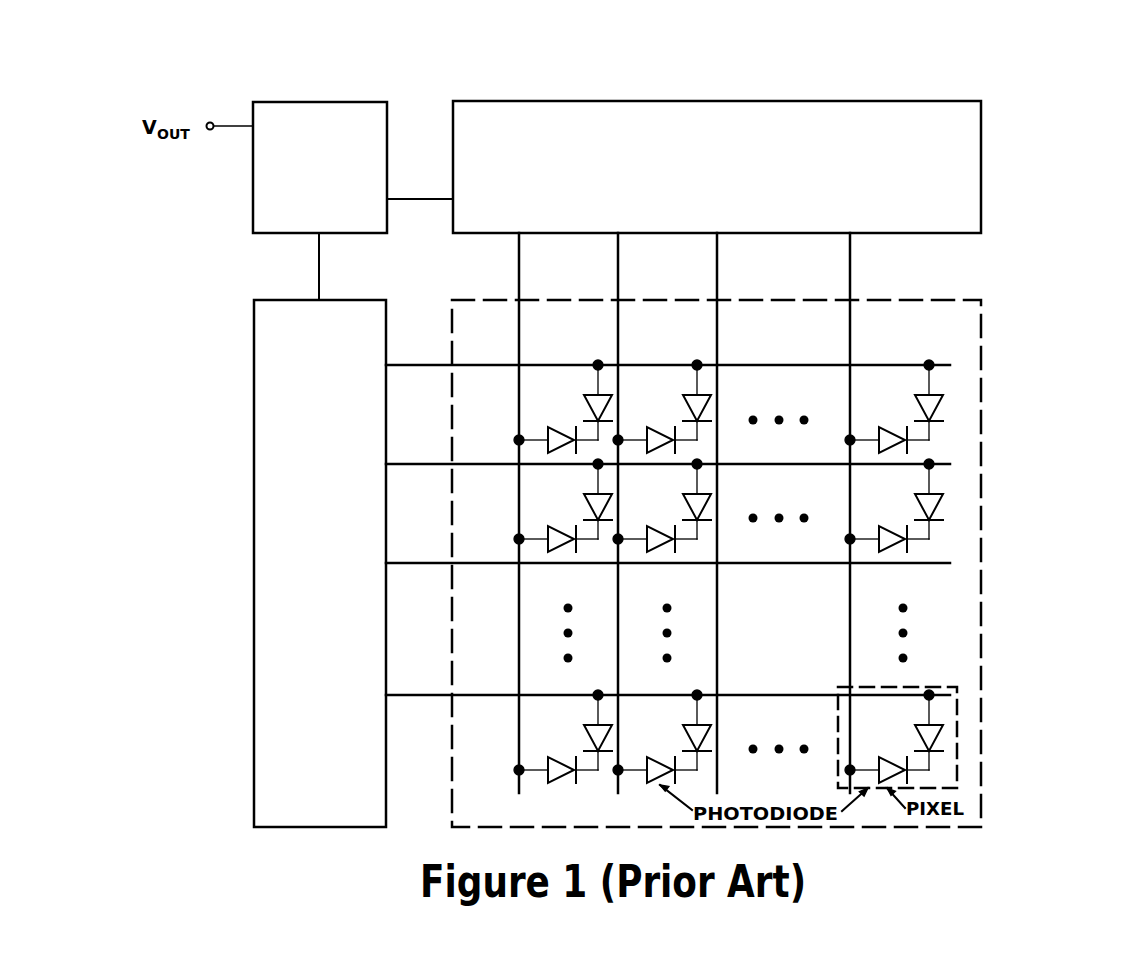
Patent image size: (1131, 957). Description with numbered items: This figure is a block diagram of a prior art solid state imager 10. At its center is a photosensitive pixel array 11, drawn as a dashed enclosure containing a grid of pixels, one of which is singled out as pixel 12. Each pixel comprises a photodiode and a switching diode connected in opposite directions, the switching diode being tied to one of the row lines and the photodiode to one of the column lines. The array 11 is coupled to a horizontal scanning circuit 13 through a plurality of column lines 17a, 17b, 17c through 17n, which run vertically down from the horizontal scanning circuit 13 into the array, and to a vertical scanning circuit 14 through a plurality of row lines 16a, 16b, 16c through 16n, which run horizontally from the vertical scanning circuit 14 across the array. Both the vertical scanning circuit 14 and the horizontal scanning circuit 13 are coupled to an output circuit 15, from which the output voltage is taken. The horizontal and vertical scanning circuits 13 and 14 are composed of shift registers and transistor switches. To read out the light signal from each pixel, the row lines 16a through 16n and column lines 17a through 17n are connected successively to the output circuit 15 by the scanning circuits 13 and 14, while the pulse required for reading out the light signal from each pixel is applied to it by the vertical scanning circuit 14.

The solid state imager 10 is at (1047, 81).
The photosensitive pixel array 11 is at (983, 398).
The pixel 12 is at (921, 690).
The horizontal scanning circuit 13 is at (983, 172).
The vertical scanning circuit 14 is at (348, 299).
The output circuit 15 is at (348, 99).
The row line 16a is at (397, 364).
The row line 16b is at (397, 463).
The row line 16c is at (397, 562).
The row line 16n is at (397, 694).
The column line 17a is at (522, 291).
The column line 17b is at (621, 291).
The column line 17c is at (720, 291).
The column line 17n is at (853, 291).